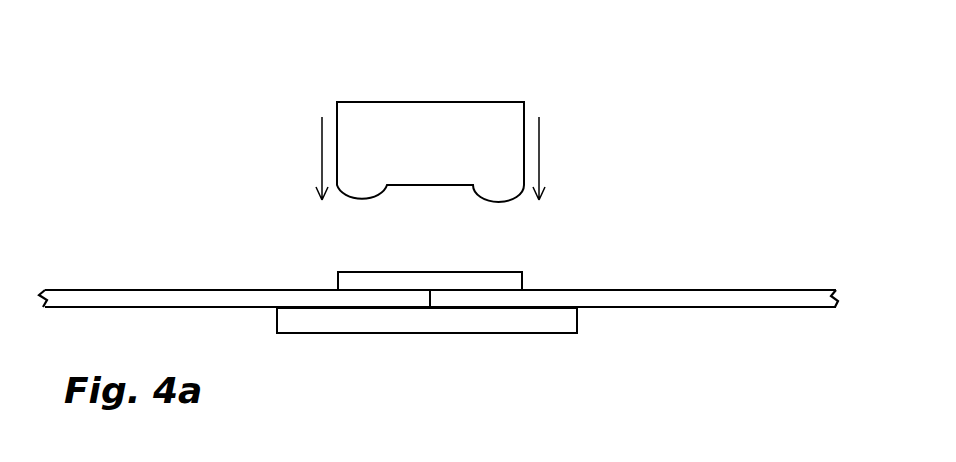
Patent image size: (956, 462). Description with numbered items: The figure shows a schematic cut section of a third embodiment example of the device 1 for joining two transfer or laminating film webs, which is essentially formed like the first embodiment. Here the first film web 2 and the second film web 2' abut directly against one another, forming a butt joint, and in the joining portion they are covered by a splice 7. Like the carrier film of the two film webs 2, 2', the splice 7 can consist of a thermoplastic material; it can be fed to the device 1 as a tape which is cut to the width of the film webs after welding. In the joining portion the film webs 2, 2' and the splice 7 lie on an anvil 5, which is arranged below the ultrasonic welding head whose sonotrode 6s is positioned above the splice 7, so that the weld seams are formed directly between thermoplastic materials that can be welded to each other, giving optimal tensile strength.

The device 1 is at (728, 108).
The first film web 2 is at (234, 267).
The second film web 2' is at (634, 277).
The anvil 5 is at (470, 327).
The sonotrode 6s is at (462, 117).
The splice 7 is at (510, 280).